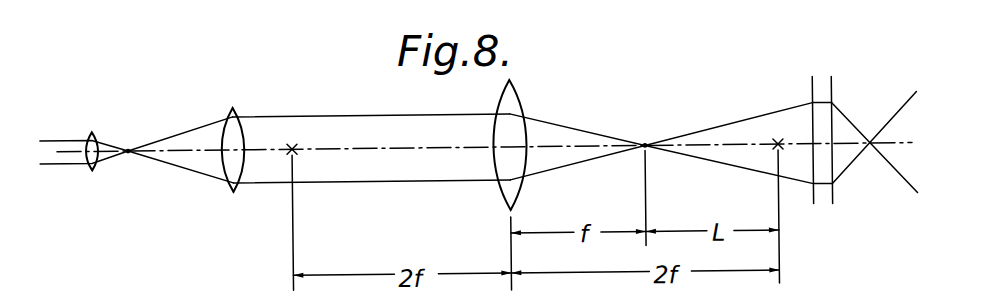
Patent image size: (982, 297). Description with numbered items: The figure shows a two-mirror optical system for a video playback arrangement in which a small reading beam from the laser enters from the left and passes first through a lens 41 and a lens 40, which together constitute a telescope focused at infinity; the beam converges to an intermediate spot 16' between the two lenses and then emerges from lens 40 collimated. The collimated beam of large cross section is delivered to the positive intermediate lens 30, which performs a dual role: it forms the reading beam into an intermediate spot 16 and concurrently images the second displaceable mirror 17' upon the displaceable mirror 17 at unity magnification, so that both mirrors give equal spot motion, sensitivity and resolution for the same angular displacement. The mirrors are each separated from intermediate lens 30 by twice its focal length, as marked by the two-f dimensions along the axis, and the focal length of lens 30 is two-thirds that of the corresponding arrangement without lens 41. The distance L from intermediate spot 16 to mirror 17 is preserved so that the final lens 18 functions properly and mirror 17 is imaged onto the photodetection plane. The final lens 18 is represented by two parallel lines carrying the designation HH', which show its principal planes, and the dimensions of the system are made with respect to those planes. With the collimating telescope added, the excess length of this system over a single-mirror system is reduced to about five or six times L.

The intermediate spot 16 is at (662, 143).
The intermediate spot 16' is at (179, 143).
The displaceable mirror 17 is at (750, 121).
The second mirror 17' is at (309, 122).
The final lens 18 is at (865, 154).
The intermediate lens 30 is at (525, 130).
The lens 40 is at (222, 165).
The lens 41 is at (96, 164).
The principal planes HH' is at (853, 159).